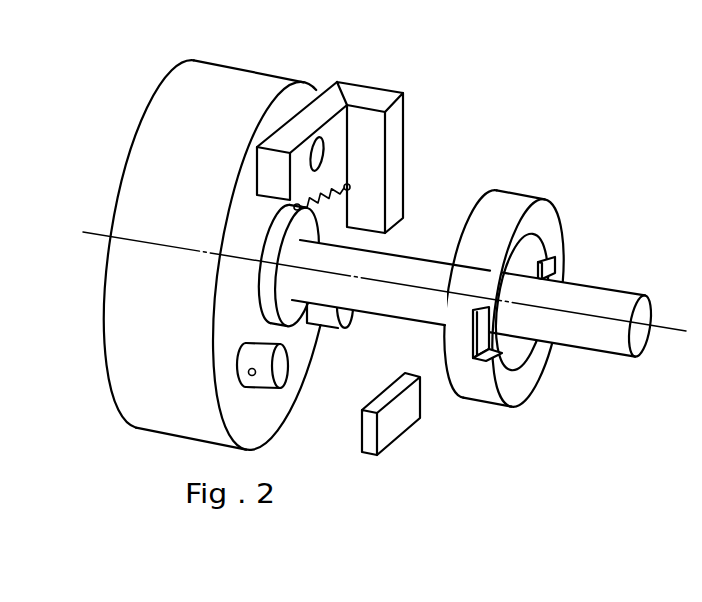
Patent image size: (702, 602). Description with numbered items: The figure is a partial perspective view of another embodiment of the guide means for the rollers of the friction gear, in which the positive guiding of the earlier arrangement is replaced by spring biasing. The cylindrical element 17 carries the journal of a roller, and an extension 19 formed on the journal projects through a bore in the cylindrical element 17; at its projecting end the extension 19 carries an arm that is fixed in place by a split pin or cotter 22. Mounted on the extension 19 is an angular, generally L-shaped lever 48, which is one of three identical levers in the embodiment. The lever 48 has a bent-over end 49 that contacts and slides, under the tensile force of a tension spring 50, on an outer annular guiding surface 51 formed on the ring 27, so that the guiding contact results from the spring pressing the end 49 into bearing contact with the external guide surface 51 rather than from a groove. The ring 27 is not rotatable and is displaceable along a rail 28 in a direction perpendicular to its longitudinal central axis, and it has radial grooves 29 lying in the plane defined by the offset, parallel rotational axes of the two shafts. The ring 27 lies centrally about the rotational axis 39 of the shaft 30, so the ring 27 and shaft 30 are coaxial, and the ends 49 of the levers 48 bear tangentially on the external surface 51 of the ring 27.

The cylindrical element 17 is at (208, 72).
The extension 19 is at (325, 150).
The split pin or cotter 22 is at (308, 113).
The ring 27 is at (545, 212).
The rail 28 is at (397, 427).
The grooves 29 is at (549, 268).
The shaft 30 is at (600, 297).
The rotational or central longitudinal axis 39 is at (90, 237).
The lever 48 is at (376, 96).
The bent-over end 49 is at (397, 180).
The tension spring 50 is at (340, 177).
The outer annular guiding surface 51 is at (507, 190).